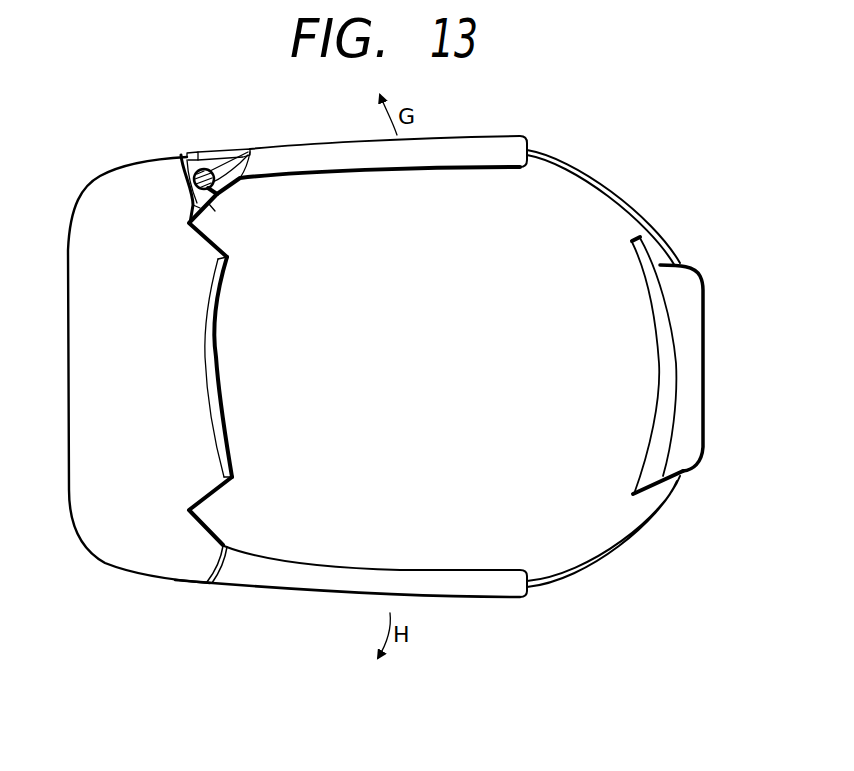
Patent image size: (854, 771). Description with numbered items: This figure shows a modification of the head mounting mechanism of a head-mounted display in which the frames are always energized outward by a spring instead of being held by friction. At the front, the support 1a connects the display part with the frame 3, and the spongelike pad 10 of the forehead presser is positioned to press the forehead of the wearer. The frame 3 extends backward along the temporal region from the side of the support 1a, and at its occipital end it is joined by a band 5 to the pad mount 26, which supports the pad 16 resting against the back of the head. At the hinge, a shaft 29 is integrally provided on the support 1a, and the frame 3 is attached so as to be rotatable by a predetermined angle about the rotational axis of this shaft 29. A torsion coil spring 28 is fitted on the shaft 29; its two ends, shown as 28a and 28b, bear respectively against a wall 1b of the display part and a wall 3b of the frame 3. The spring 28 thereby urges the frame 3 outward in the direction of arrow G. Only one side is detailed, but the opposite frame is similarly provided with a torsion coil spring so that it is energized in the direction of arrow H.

The support 1a is at (148, 170).
The wall of the display part 1b is at (213, 207).
The frame 3 is at (502, 143).
The wall of the frame 3b is at (247, 165).
The head band 5 is at (610, 188).
The pad 10 is at (208, 365).
The pad 16 is at (667, 362).
The pad mount 26 is at (693, 383).
The torsion coil spring 28 is at (210, 152).
The hinge member arm 28a is at (200, 208).
The hinge member plate 28b is at (233, 148).
The shaft 29 is at (187, 160).